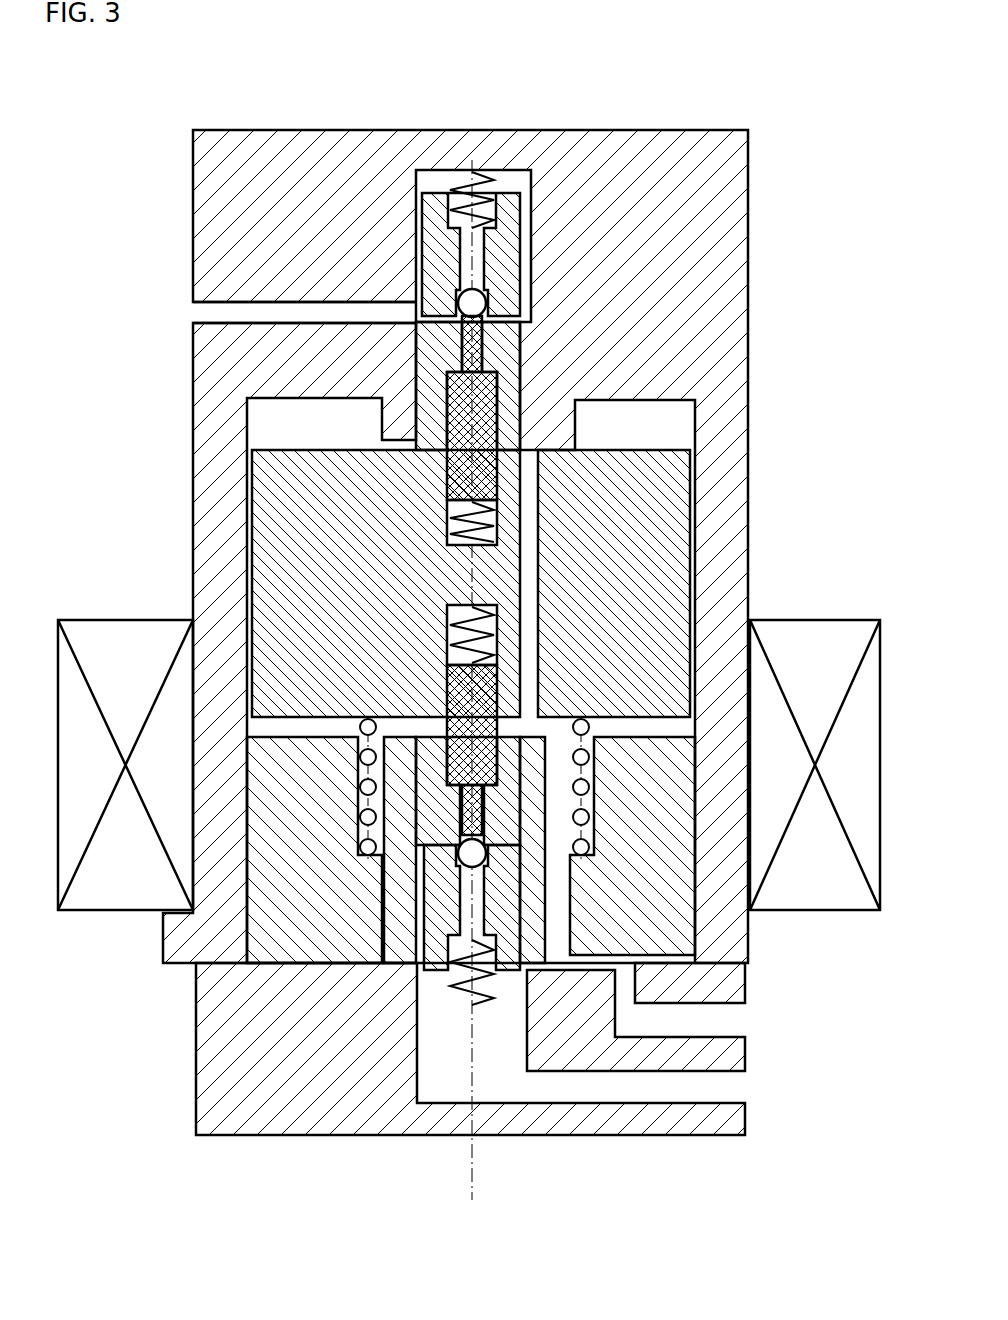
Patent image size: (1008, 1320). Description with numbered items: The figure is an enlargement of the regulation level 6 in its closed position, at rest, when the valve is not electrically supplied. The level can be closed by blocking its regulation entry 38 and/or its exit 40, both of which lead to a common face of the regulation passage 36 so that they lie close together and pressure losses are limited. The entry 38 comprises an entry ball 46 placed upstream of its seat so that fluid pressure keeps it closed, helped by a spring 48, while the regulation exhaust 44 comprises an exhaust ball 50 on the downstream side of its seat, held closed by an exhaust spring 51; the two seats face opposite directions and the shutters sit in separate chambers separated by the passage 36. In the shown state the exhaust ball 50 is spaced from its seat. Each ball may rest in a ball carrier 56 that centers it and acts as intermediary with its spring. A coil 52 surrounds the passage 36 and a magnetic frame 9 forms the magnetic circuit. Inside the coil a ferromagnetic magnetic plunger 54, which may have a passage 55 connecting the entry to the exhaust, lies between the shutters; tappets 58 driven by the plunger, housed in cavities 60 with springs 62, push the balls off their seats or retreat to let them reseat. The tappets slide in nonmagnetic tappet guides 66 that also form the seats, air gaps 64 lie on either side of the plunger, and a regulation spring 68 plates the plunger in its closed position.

The regulation level 6 is at (272, 1174).
The magnetic frame 9 is at (700, 346).
The regulation passage 36 is at (544, 734).
The regulation entry 38 is at (728, 1096).
The exit 40 is at (728, 1032).
The regulation exhaust 44 is at (240, 312).
The entry ball 46 is at (480, 868).
The spring 48 is at (480, 1008).
The exhaust ball 50 is at (480, 296).
The exhaust spring 51 is at (450, 182).
The coil 52 is at (138, 884).
The magnetic plunger 54 is at (334, 586).
The passage 55 is at (545, 578).
The ball carrier 56 is at (522, 240).
The tappet 58 is at (447, 485).
The cavity 60 is at (448, 608).
The spring 62 is at (499, 520).
The air gap 64 is at (292, 740).
The tappet guide 66 is at (525, 368).
The regulation spring 68 is at (364, 852).